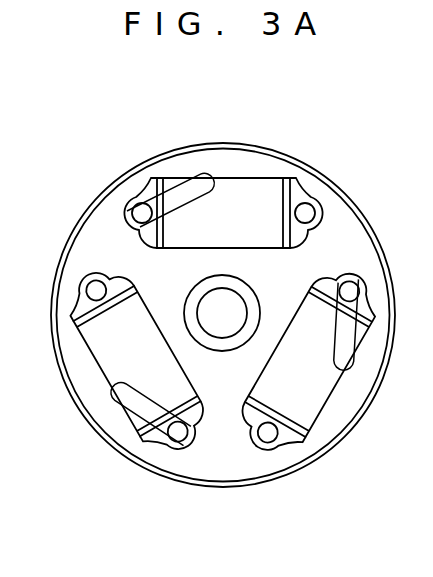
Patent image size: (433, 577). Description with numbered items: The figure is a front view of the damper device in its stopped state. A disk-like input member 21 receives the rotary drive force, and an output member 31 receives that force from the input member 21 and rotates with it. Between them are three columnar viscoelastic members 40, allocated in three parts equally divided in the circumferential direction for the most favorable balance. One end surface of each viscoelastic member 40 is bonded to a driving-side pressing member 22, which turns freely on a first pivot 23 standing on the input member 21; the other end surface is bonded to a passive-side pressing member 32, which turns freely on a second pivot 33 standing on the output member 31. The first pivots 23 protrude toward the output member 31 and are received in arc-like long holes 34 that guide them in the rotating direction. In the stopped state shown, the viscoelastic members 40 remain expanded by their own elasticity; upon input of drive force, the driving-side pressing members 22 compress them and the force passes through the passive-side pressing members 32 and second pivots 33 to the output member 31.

The input member 21 is at (288, 159).
The output member 31 is at (380, 239).
The columnar viscoelastic member 40 is at (242, 178).
The driving-side pressing member 22 is at (133, 195).
The first pivot 23 is at (140, 215).
The passive-side pressing member 32 is at (297, 187).
The second pivot 33 is at (306, 212).
The arc-like long hole 34 is at (183, 198).